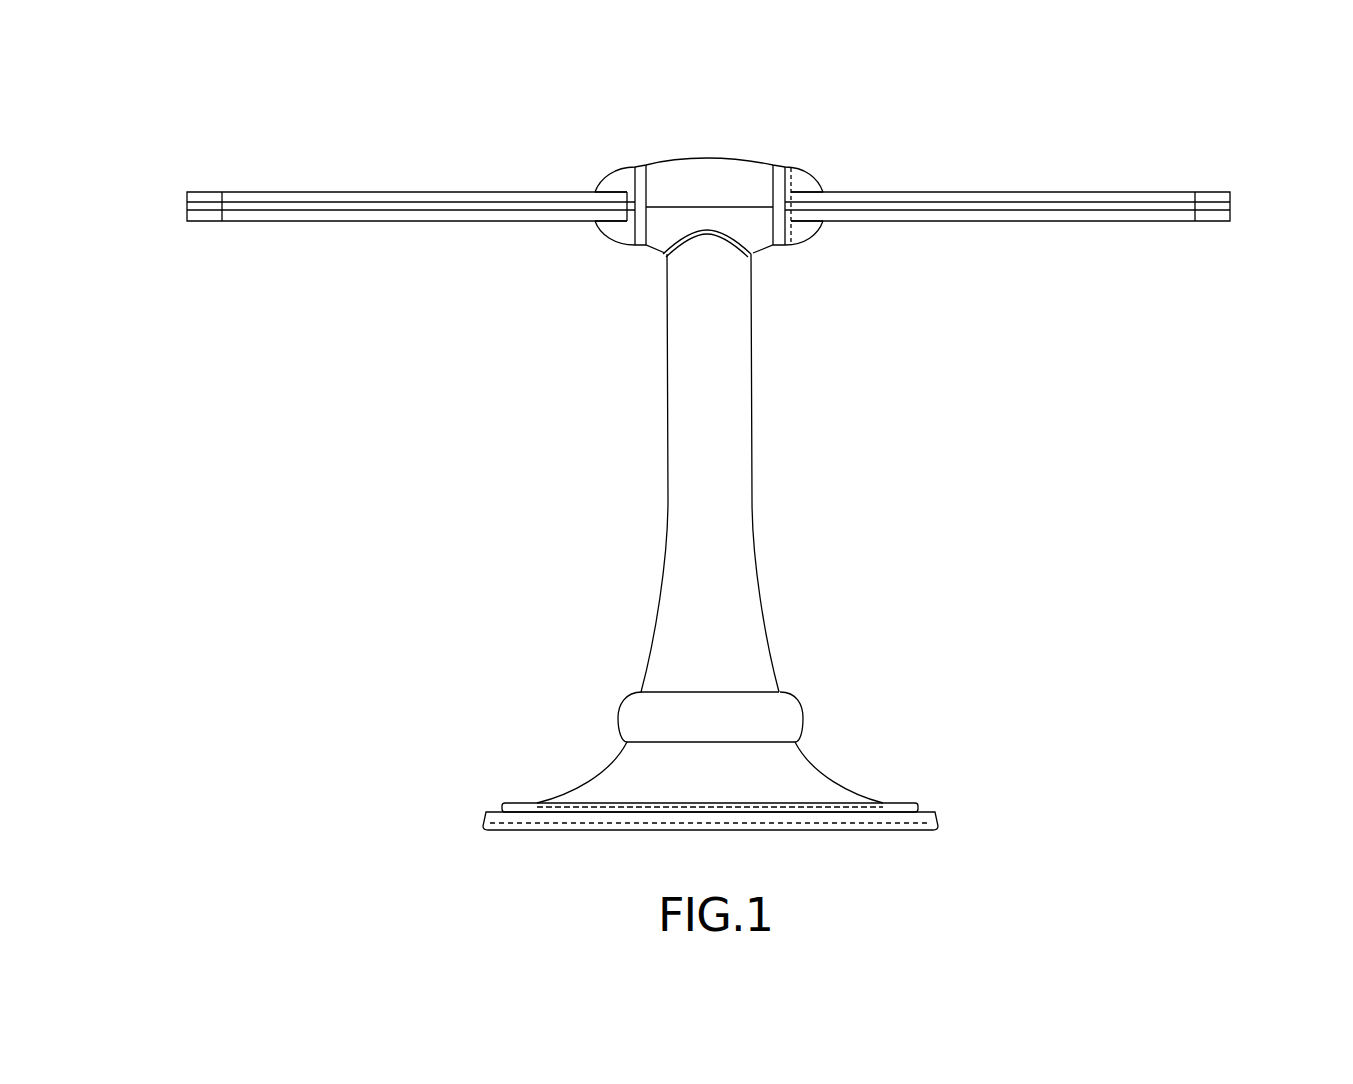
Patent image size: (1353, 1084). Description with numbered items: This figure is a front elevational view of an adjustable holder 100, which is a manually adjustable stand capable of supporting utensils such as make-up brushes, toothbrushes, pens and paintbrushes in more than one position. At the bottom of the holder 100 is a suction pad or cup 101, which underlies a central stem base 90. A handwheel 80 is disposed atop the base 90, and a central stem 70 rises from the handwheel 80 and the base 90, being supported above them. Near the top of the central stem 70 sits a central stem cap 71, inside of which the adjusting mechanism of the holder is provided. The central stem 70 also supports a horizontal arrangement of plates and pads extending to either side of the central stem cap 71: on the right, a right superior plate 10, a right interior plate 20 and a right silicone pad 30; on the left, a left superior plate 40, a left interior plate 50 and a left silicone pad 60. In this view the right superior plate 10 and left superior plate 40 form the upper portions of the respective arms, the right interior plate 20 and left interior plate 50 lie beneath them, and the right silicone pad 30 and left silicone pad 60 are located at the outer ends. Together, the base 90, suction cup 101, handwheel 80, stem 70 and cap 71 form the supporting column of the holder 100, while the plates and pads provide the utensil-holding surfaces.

The adjustable holder 100 is at (560, 405).
The right superior plate 10 is at (1168, 192).
The right interior plate 20 is at (1168, 222).
The right silicone pad 30 is at (1233, 207).
The left superior plate 40 is at (270, 191).
The left interior plate 50 is at (270, 222).
The left silicone pad 60 is at (185, 206).
The central stem 70 is at (752, 437).
The central stem cap 71 is at (706, 158).
The handwheel 80 is at (792, 708).
The central stem base 90 is at (825, 774).
The suction pad or cup 101 is at (928, 818).